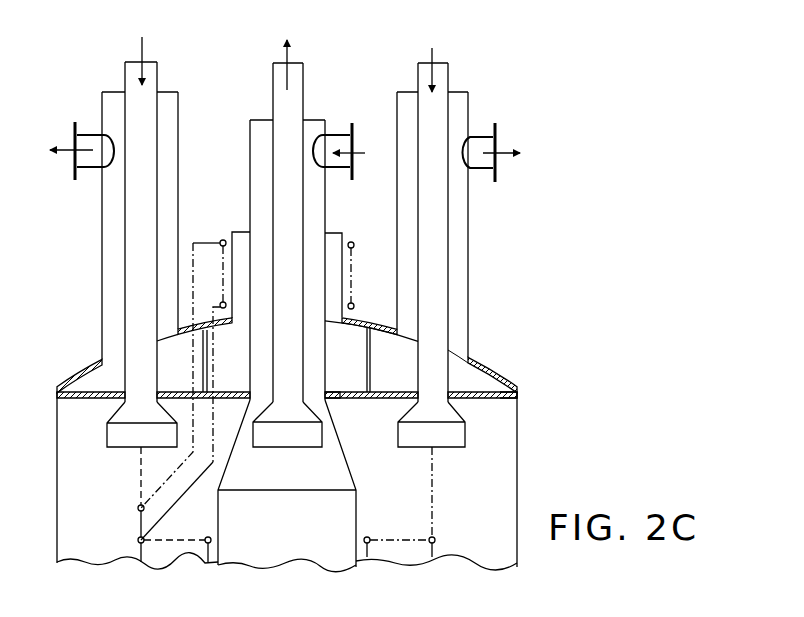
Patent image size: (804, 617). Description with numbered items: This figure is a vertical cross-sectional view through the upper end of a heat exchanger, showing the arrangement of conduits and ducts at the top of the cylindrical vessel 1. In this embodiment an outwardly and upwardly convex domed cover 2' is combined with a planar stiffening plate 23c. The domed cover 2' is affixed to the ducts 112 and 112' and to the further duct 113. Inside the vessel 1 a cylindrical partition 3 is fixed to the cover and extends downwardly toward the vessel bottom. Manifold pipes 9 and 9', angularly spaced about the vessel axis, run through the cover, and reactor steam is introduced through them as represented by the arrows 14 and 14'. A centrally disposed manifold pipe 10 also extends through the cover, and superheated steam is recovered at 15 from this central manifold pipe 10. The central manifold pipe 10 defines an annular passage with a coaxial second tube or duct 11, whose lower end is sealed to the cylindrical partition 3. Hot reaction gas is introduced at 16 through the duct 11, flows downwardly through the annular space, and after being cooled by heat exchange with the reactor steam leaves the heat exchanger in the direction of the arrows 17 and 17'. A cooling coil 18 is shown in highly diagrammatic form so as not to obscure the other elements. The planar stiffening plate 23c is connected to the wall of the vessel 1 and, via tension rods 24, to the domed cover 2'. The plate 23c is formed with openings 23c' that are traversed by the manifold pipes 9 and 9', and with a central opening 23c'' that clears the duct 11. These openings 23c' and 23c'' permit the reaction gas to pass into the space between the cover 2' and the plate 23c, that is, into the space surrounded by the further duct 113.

The vessel 1 is at (518, 460).
The domed cover 2' is at (290, 355).
The cylindrical partition 3 is at (362, 515).
The manifold pipe 9 is at (451, 210).
The manifold pipe 9' is at (115, 225).
The central manifold pipe 10 is at (305, 95).
The second tube or duct 11 is at (327, 215).
The arrow 14 is at (441, 241).
The arrow 14' is at (150, 240).
The superheated steam outlet 15 is at (290, 60).
The hot reaction gas inlet 16 is at (360, 148).
The arrow 17 is at (511, 158).
The arrow 17' is at (69, 155).
The cooling coil 18 is at (355, 303).
The tension rods 24 is at (371, 365).
The duct 112 is at (497, 224).
The duct 112' is at (210, 210).
The further duct 113 is at (332, 230).
The planar stiffening plate 23c is at (287, 436).
The openings 23c' is at (516, 381).
The central opening 23c'' is at (359, 410).